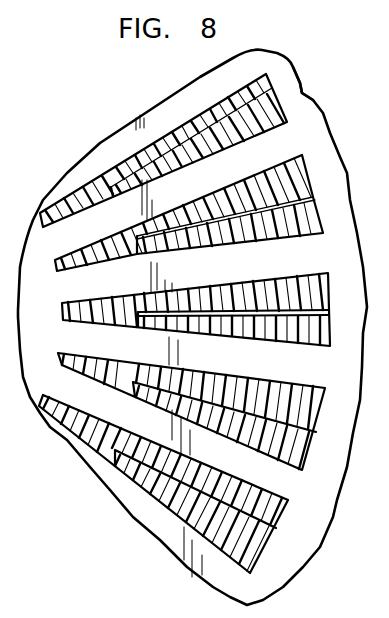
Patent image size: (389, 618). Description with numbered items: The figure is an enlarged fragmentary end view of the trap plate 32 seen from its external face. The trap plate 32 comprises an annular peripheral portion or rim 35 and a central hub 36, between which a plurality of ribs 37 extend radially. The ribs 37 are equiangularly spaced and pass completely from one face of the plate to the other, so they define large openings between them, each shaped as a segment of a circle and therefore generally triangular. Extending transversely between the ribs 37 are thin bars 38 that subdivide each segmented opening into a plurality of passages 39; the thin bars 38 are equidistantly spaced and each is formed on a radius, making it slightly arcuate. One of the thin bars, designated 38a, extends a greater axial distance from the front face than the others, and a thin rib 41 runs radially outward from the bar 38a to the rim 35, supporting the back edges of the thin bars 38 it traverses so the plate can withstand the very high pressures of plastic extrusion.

The trap plate 32 is at (86, 157).
The rim 35 is at (298, 93).
The central hub 36 is at (37, 343).
The ribs 37 is at (243, 277).
The thin bars 38 is at (318, 288).
The thin bar 38a is at (137, 303).
The passages 39 is at (273, 342).
The thin rib 41 is at (323, 312).